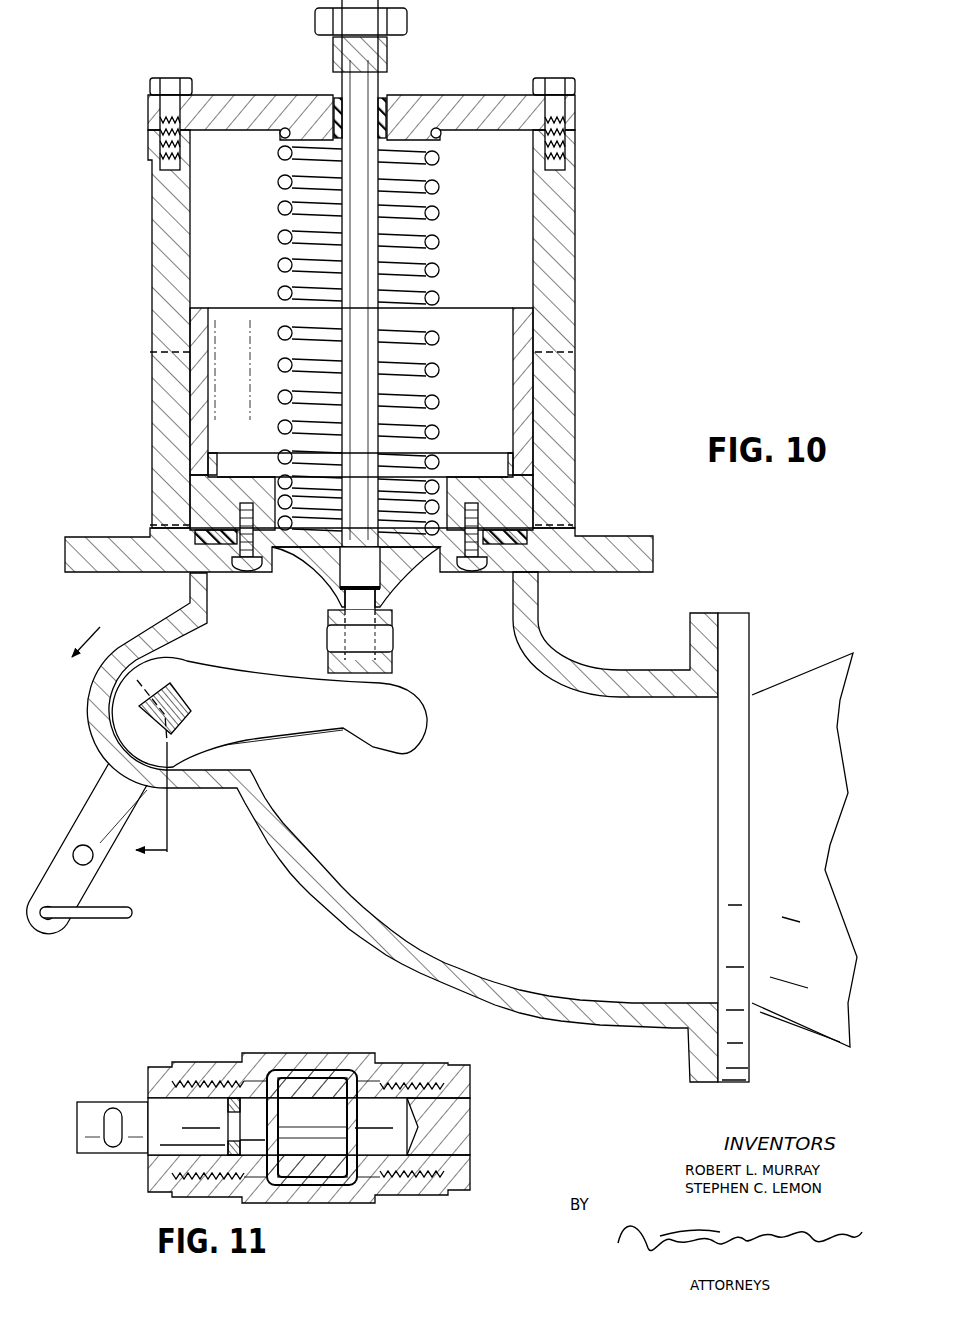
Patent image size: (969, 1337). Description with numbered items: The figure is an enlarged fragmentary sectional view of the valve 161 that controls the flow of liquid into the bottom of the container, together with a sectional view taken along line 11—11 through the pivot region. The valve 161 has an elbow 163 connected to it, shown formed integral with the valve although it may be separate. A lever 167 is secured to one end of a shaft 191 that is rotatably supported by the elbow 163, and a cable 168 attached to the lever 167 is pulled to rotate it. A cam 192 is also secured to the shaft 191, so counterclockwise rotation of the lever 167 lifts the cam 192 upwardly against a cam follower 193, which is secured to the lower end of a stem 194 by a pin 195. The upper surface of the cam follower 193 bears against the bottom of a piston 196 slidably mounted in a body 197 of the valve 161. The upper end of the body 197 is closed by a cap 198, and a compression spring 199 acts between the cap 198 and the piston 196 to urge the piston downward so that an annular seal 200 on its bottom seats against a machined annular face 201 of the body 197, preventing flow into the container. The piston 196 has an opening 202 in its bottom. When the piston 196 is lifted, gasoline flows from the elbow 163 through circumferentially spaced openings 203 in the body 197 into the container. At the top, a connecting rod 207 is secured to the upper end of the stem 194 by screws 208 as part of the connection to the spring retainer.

In FIG. 10, the valve 161 is at (604, 262).
In FIG. 10, the elbow 163 is at (316, 897).
In FIG. 10, the lever 167 is at (80, 812).
In FIG. 11, the lever 167 is at (128, 1102).
In FIG. 10, the cable 168 is at (102, 918).
In FIG. 10, the shaft 191 is at (200, 730).
In FIG. 11, the shaft 191 is at (167, 1107).
In FIG. 10, the cam 192 is at (293, 740).
In FIG. 11, the cam 192 is at (330, 1183).
In FIG. 10, the cam follower 193 is at (392, 665).
In FIG. 10, the stem 194 is at (372, 210).
In FIG. 10, the pin 195 is at (394, 638).
In FIG. 10, the piston 196 is at (540, 419).
In FIG. 10, the body 197 is at (576, 330).
In FIG. 10, the cap 198 is at (500, 93).
In FIG. 10, the compression spring 199 is at (436, 272).
In FIG. 10, the annular seal 200 is at (527, 530).
In FIG. 10, the machined annular face 201 is at (540, 578).
In FIG. 10, the opening 202 is at (412, 574).
In FIG. 10, the openings 203 is at (162, 372).
In FIG. 10, the connecting rod 207 is at (388, 60).
In FIG. 10, the screws 208 is at (315, 17).
In FIG. 10, the section line 11- 11 is at (123, 743).